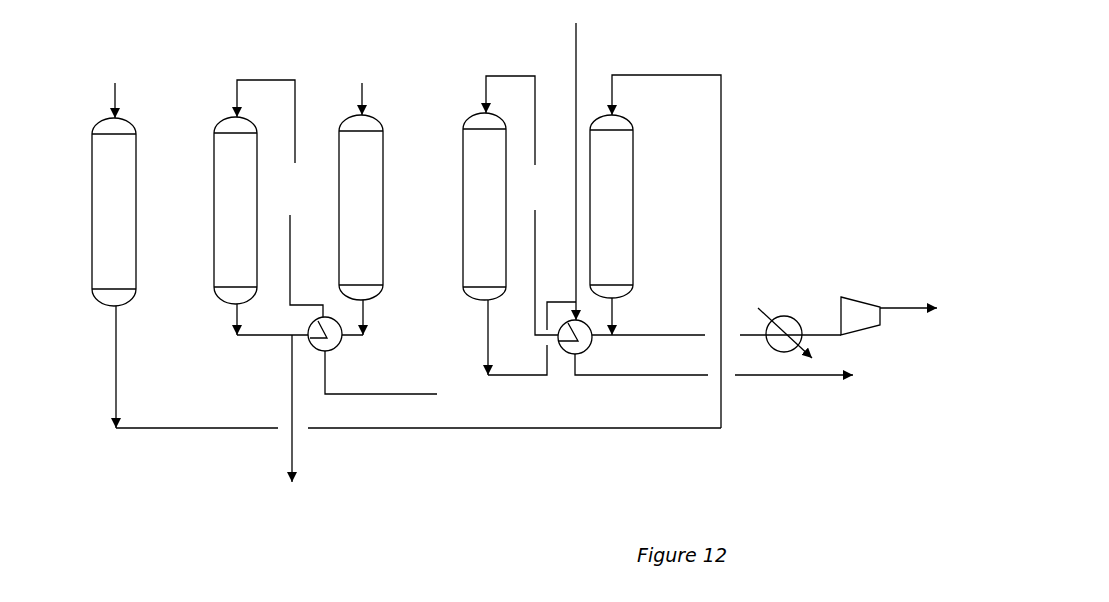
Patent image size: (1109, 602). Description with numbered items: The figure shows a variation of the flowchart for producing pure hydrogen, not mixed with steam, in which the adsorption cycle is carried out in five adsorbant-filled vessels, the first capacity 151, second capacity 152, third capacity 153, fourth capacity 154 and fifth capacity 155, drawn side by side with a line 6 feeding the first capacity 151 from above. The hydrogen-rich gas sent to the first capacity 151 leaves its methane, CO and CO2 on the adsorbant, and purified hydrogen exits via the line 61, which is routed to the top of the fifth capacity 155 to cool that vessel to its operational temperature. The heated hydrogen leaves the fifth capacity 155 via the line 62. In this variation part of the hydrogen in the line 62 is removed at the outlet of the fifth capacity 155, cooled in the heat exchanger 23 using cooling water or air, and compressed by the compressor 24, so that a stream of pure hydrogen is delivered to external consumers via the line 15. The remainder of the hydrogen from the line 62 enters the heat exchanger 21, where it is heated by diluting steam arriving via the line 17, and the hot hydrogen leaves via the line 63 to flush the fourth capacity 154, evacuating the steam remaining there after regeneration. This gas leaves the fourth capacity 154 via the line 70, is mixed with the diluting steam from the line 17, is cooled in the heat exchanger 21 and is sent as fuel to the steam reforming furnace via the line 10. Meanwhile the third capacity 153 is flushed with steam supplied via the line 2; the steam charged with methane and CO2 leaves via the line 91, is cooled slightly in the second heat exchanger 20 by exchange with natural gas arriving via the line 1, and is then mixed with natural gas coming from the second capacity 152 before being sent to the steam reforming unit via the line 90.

The first capacity 151 is at (122, 245).
The second capacity 152 is at (243, 232).
The third capacity 153 is at (365, 227).
The fourth capacity 154 is at (493, 228).
The fifth capacity 155 is at (617, 238).
The feed stream 6 is at (110, 86).
The line 1 is at (253, 108).
The line 2 is at (370, 84).
The line 63 is at (495, 205).
The line 17 is at (566, 160).
The line 61 is at (665, 236).
The second heat exchanger 20 is at (327, 338).
The heat exchanger 21 is at (578, 341).
The line 91 is at (318, 318).
The line 90 is at (308, 419).
The line 70 is at (514, 337).
The line 62 is at (716, 316).
The line 10 is at (714, 383).
The heat exchanger 23 is at (778, 320).
The compressor 24 is at (857, 300).
The line 15 is at (908, 296).